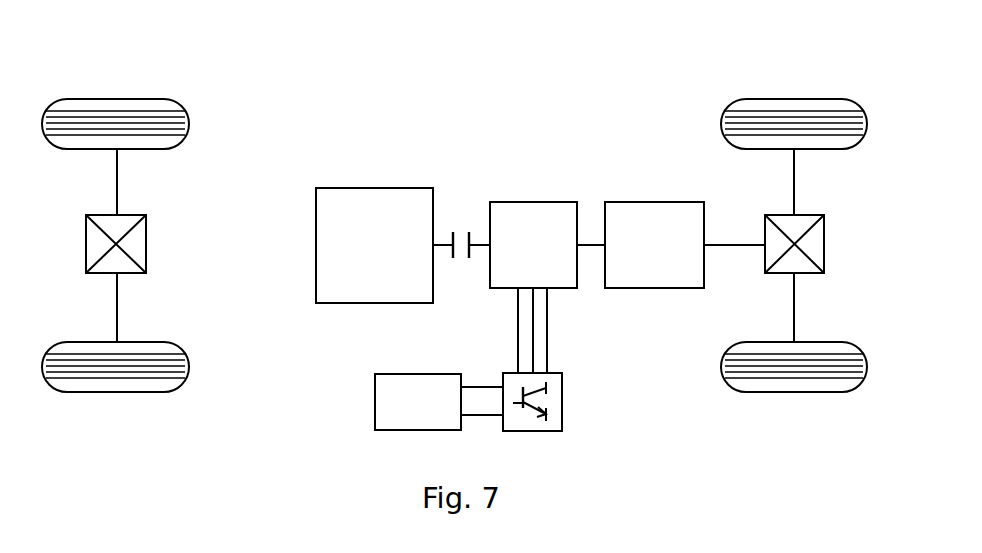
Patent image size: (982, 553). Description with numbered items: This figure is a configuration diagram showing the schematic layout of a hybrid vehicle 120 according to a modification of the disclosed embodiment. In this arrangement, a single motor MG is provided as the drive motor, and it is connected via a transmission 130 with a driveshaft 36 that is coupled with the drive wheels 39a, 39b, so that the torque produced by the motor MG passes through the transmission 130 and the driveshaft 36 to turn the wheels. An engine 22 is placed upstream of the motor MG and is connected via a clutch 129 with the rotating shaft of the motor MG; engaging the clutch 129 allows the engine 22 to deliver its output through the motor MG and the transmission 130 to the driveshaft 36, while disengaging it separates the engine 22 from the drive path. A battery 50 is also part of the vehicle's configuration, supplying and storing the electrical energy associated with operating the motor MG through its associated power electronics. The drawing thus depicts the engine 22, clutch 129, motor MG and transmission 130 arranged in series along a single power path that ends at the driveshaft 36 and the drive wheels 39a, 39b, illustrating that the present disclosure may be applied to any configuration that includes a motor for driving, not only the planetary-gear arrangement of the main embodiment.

The engine 22 is at (376, 185).
The clutch 129 is at (462, 227).
The motor MG is at (533, 200).
The transmission 130 is at (651, 200).
The driveshaft 36 is at (722, 242).
The drive wheel 39a is at (794, 98).
The drive wheel 39b is at (794, 392).
The battery 50 is at (419, 372).
The hybrid vehicle 120 is at (655, 87).